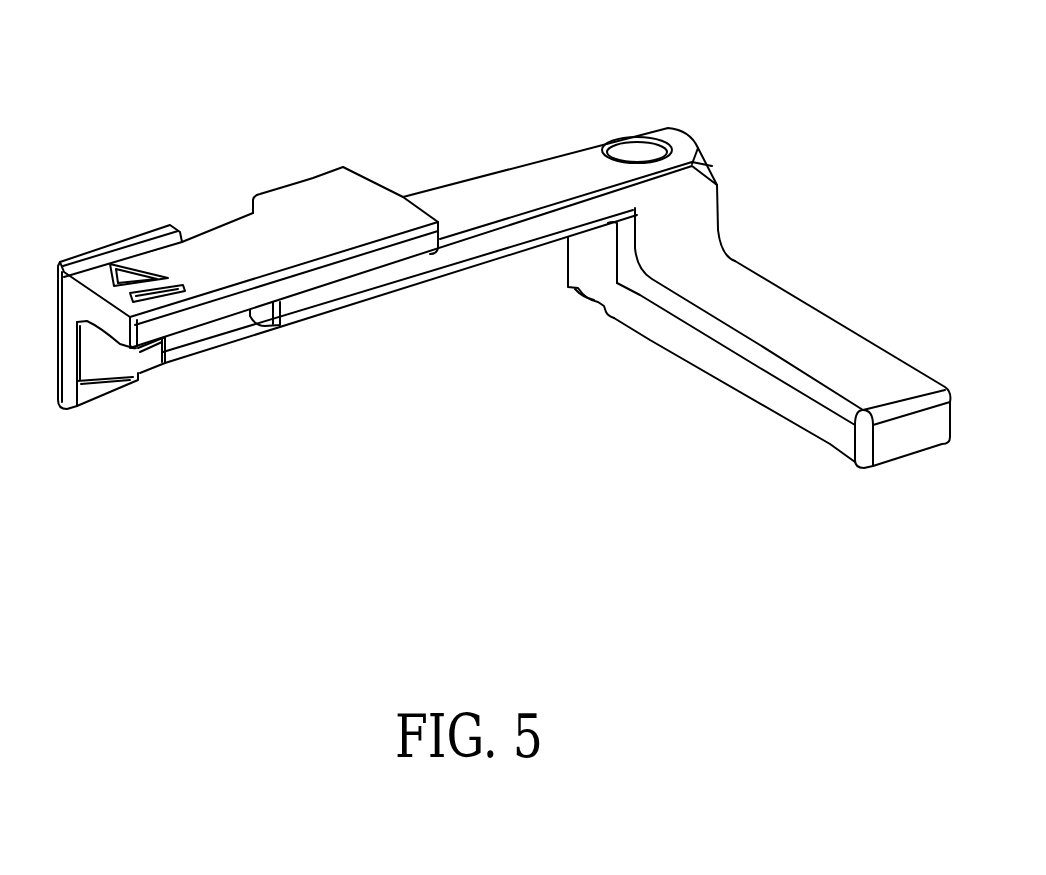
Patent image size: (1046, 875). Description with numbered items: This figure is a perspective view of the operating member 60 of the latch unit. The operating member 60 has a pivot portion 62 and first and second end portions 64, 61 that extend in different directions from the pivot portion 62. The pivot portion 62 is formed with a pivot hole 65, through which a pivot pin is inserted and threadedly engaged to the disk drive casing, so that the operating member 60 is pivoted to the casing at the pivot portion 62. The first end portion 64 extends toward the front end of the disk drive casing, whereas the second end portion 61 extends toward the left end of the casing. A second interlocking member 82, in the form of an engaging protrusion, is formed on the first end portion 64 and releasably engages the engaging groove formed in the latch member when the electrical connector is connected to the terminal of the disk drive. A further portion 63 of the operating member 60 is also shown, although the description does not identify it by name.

The operating member 60 is at (504, 268).
The second end portion 61 is at (722, 387).
The pivot portion 62 is at (572, 260).
The plate portion 63 is at (455, 188).
The first end portion 64 is at (228, 232).
The pivot hole 65 is at (638, 138).
The second interlocking member 82 is at (102, 368).